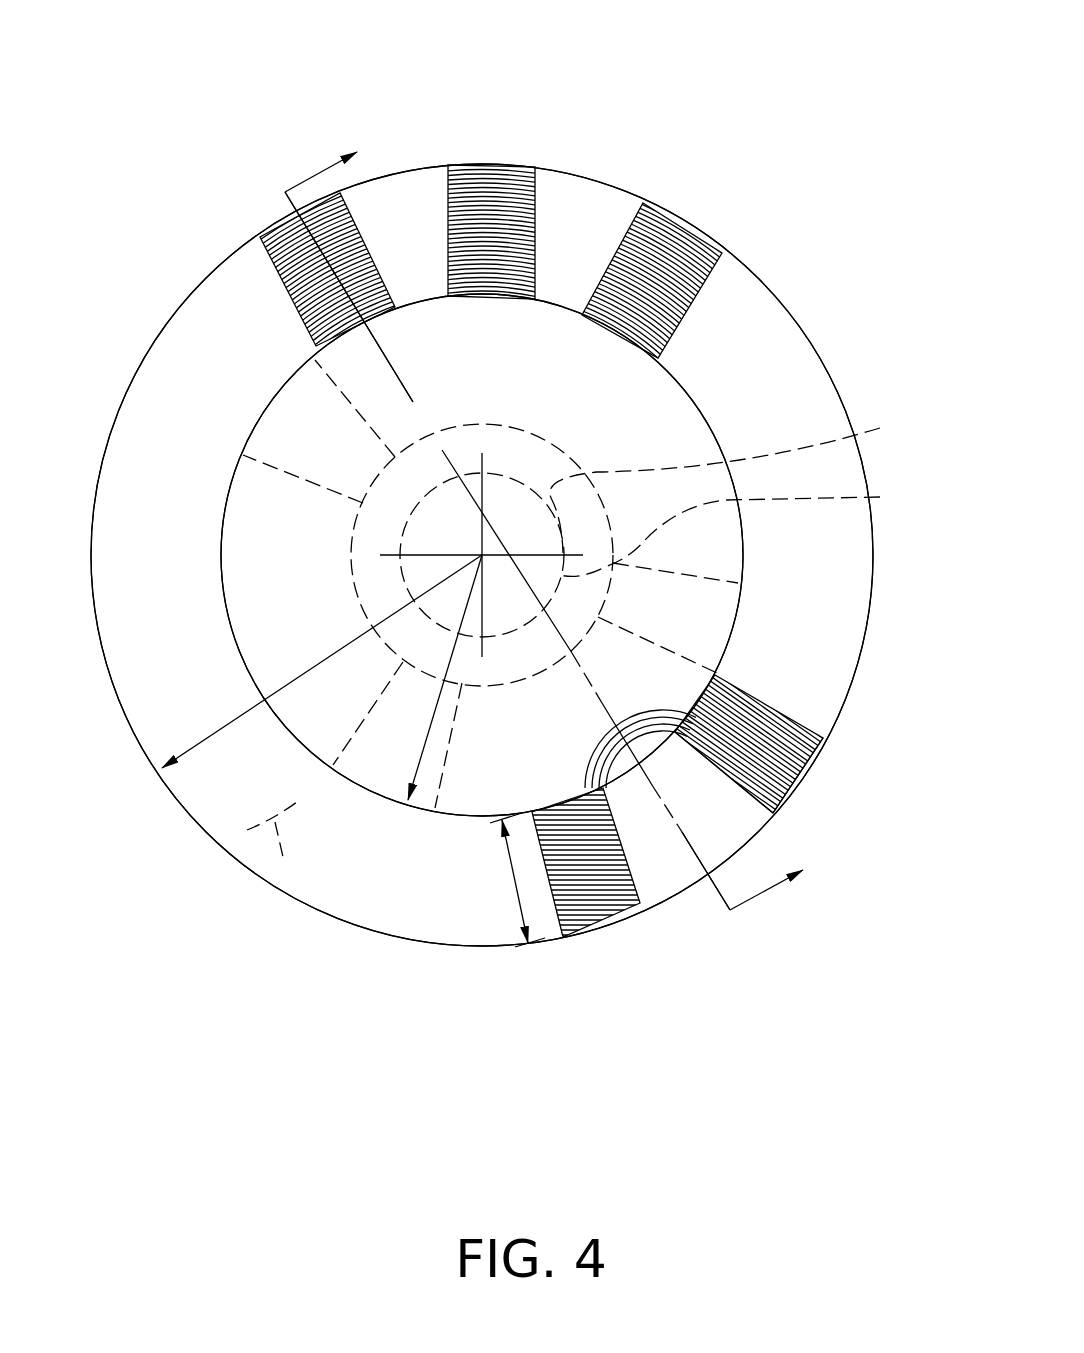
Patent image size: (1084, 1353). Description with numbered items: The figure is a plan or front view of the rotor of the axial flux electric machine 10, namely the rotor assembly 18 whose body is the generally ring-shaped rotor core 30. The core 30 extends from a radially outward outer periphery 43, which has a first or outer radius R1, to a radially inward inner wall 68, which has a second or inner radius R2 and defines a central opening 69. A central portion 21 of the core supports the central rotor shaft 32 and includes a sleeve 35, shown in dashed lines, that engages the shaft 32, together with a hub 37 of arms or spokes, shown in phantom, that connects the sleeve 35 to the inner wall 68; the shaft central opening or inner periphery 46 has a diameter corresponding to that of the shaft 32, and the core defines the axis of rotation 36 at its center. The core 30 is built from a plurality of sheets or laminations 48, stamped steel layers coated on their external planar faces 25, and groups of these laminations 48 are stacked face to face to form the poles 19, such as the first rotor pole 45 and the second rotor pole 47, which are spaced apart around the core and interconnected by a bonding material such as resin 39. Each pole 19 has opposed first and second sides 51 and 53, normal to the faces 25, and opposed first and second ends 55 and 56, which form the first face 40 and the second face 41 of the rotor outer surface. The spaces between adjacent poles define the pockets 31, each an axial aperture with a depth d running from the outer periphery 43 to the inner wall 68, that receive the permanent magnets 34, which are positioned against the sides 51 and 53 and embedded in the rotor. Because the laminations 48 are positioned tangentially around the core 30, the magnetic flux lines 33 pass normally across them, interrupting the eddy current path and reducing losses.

The machine 10 is at (825, 105).
The rotor assembly 18 is at (247, 168).
The pole 19 is at (840, 755).
The central portion 21 is at (668, 422).
The external planar face 25 is at (800, 748).
The rotor core 30 is at (122, 420).
The pocket 31 is at (570, 185).
The central rotor shaft 32 is at (733, 477).
The magnetic flux lines 33 is at (594, 752).
The magnet 34 is at (610, 180).
The sleeve 35 is at (505, 427).
The axis of rotation 36 is at (480, 553).
The hub 37 is at (637, 637).
The resin 39 is at (640, 897).
The first face 40 is at (283, 870).
The second face 41 is at (418, 856).
The outer periphery 43 is at (207, 830).
The first rotor pole 45 is at (712, 212).
The inner periphery 46 is at (749, 526).
The second rotor pole 47 is at (525, 147).
The laminations 48 is at (285, 250).
The first side 51 is at (738, 687).
The second side 53 is at (727, 787).
The first end 55 is at (560, 884).
The second end 56 is at (592, 867).
The inner wall 68 is at (288, 725).
The central opening 69 is at (305, 438).
The outer radius R1 is at (302, 673).
The inner radius R2 is at (440, 716).
The depth d is at (520, 886).